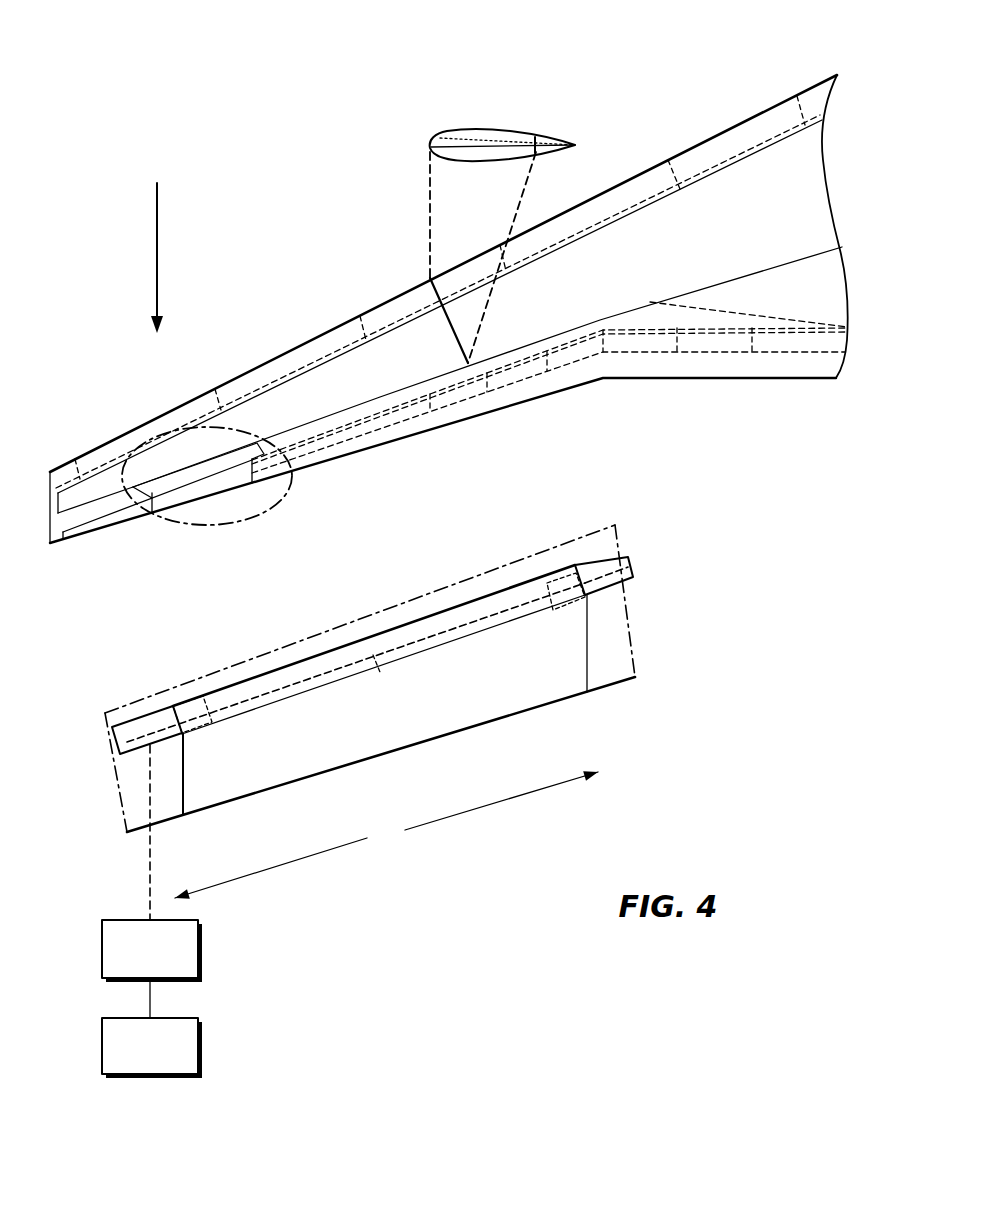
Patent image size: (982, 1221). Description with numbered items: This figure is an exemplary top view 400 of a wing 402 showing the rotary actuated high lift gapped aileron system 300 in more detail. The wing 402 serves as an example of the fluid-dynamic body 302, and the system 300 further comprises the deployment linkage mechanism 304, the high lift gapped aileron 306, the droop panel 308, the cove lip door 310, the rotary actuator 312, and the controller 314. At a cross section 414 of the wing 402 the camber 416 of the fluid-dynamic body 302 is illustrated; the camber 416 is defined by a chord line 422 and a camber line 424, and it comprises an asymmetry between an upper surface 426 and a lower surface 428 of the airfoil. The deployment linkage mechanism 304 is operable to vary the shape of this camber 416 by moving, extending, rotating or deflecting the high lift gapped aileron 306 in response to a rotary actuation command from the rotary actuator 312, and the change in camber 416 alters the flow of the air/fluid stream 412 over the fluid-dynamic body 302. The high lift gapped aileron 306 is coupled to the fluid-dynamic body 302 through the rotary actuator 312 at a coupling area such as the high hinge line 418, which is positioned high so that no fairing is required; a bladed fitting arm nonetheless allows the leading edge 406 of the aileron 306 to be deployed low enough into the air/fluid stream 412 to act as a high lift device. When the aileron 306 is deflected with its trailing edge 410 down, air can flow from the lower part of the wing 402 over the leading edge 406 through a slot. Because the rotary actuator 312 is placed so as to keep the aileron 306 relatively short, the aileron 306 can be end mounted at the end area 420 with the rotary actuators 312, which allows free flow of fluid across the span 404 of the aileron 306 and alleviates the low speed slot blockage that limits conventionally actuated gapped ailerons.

The rotary actuated high lift gapped aileron system 300 is at (152, 445).
The fluid-dynamic body 302 is at (385, 609).
The deployment linkage mechanism 304 is at (152, 1048).
The high lift gapped aileron 306 is at (545, 148).
The droop panel 308 is at (589, 596).
The cove lip door 310 is at (470, 636).
The rotary actuator 312 is at (153, 728).
The controller 314 is at (152, 969).
The top view 400 is at (193, 97).
The wing 402 is at (291, 345).
The span 404 is at (386, 835).
The leading edge 406 is at (250, 714).
The trailing edge 410 is at (221, 806).
The air/fluid stream 412 is at (157, 243).
The cross section 414 is at (460, 327).
The camber 416 is at (477, 142).
The high hinge line 418 is at (116, 731).
The end area 420 is at (180, 703).
The chord line 422 is at (478, 148).
The camber line 424 is at (432, 133).
The upper surface 426 is at (483, 129).
The lower surface 428 is at (480, 160).